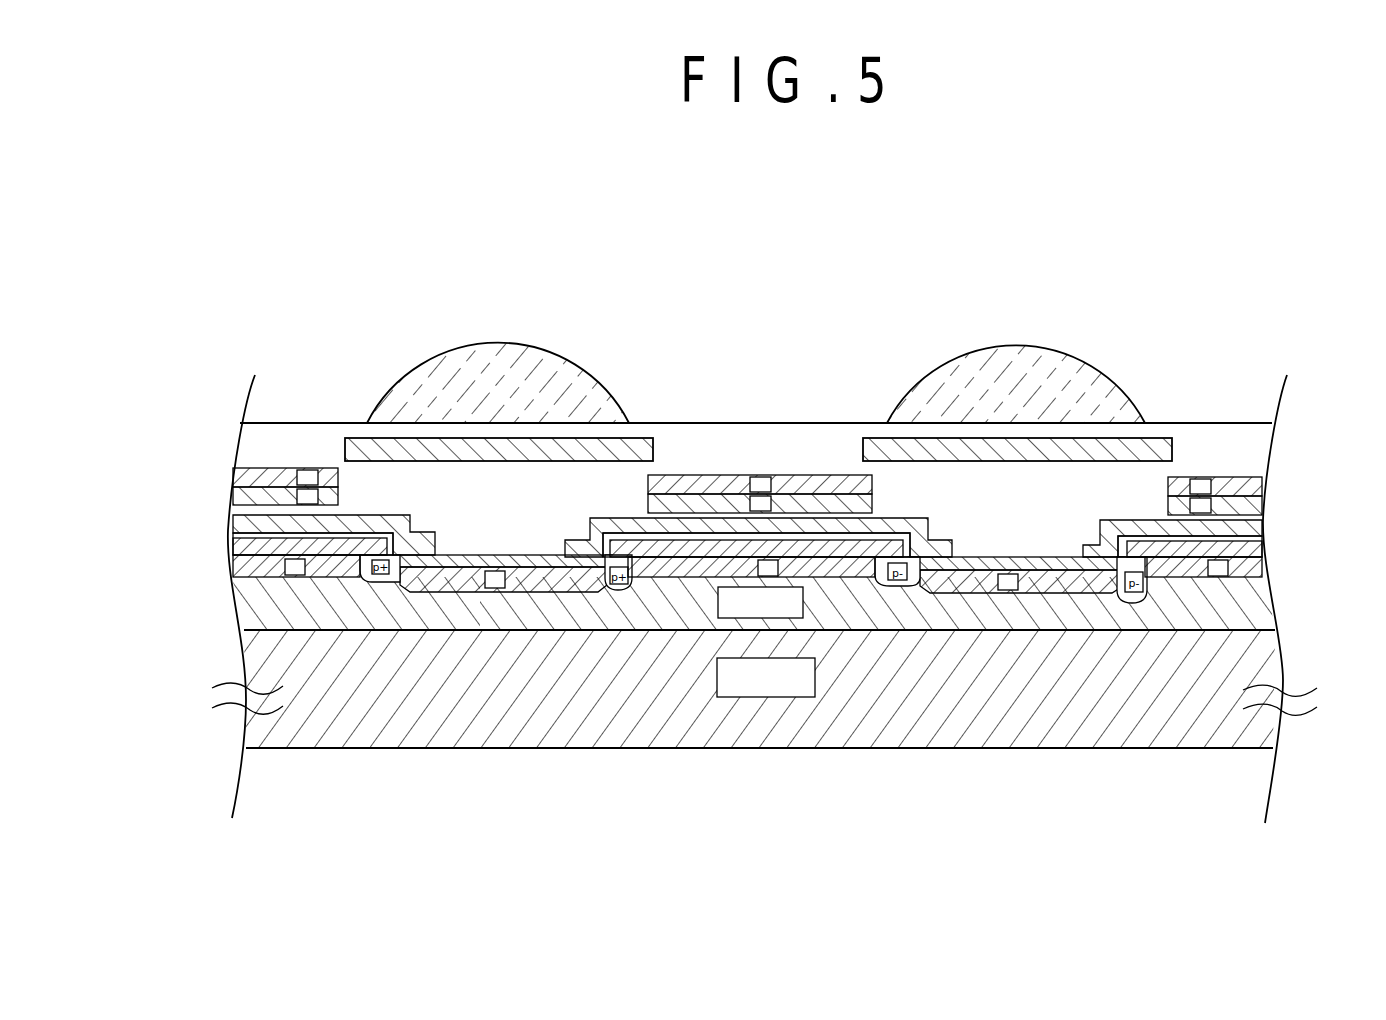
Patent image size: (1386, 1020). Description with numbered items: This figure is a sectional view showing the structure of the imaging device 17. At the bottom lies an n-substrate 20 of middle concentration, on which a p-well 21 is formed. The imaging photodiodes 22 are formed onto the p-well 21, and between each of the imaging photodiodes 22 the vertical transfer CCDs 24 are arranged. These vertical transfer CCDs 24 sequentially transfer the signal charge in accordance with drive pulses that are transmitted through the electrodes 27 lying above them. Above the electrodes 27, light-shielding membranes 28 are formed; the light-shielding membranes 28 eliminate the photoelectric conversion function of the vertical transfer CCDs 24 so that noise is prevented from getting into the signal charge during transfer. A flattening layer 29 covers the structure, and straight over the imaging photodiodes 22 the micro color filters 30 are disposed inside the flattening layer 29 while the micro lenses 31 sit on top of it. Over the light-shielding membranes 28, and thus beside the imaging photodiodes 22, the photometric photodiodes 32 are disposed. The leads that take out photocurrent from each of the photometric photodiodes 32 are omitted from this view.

The imaging device 17 is at (338, 243).
The n-substrate 20 is at (798, 713).
The p-well 21 is at (1233, 607).
The imaging photodiode 22 is at (462, 603).
The vertical transfer CCD 24 is at (240, 572).
The electrode 27 is at (338, 547).
The light-shielding membrane 28 is at (407, 523).
The flattening layer 29 is at (822, 438).
The micro color filter 30 is at (646, 445).
The micro lens 31 is at (493, 373).
The photometric photodiode 32 is at (282, 468).